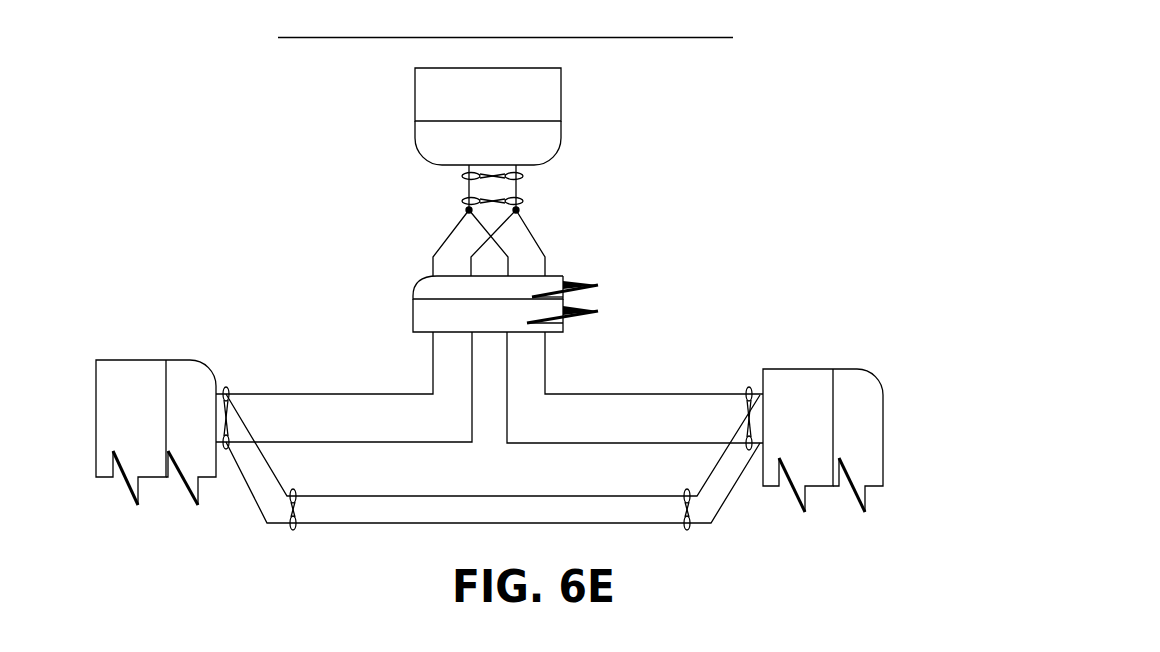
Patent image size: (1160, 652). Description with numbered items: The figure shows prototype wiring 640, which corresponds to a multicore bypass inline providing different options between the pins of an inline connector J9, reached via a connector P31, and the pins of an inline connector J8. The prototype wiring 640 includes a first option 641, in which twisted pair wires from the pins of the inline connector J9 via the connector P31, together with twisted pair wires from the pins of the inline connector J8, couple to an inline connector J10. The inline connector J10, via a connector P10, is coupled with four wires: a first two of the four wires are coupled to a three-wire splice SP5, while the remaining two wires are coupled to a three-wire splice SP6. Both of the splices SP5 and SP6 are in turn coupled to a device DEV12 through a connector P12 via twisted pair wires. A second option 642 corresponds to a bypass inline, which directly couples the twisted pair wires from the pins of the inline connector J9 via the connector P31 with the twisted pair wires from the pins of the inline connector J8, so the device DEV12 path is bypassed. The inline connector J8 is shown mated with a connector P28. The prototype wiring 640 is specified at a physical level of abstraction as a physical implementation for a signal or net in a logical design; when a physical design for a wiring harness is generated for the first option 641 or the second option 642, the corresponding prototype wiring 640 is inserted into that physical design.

The prototype wiring 640 is at (968, 217).
The first option 641 is at (600, 125).
The second option 642 is at (645, 546).
The device DEV12 is at (441, 94).
The connector P12 is at (459, 143).
The 3-wire splice SP5 is at (467, 225).
The 3-wire splice SP6 is at (520, 234).
The connector P10 is at (483, 283).
The inline connector J10 is at (484, 316).
The inline connector J9 is at (130, 435).
The connector P31 is at (204, 437).
The inline connector J8 is at (789, 442).
The plug connector P28 is at (873, 443).